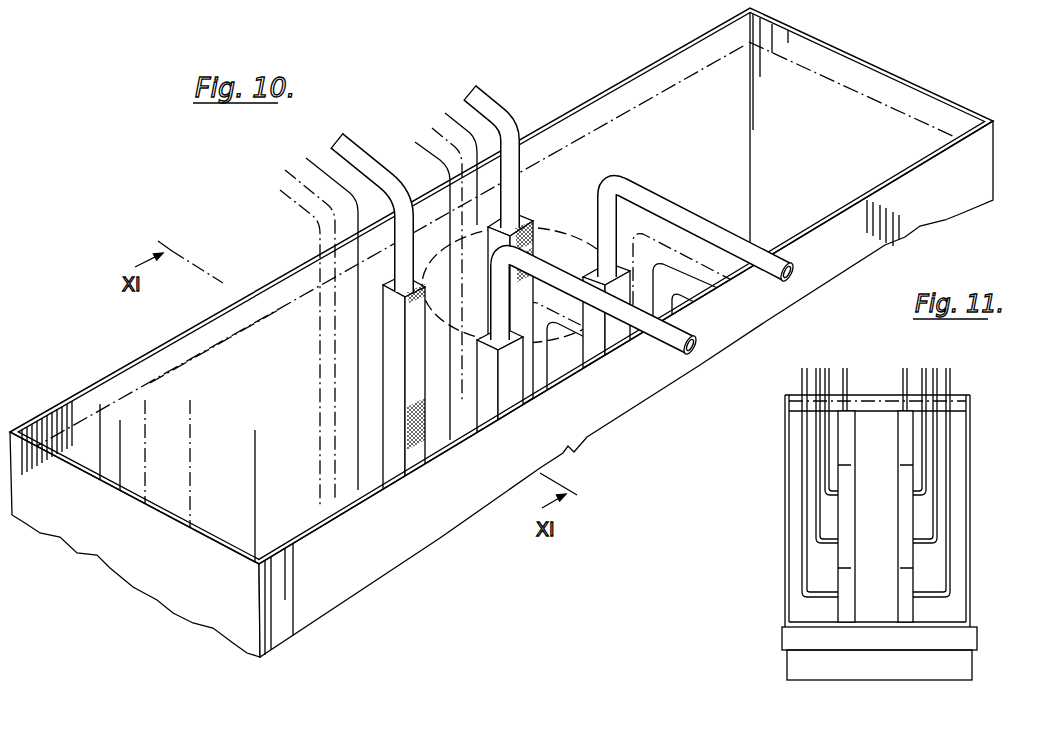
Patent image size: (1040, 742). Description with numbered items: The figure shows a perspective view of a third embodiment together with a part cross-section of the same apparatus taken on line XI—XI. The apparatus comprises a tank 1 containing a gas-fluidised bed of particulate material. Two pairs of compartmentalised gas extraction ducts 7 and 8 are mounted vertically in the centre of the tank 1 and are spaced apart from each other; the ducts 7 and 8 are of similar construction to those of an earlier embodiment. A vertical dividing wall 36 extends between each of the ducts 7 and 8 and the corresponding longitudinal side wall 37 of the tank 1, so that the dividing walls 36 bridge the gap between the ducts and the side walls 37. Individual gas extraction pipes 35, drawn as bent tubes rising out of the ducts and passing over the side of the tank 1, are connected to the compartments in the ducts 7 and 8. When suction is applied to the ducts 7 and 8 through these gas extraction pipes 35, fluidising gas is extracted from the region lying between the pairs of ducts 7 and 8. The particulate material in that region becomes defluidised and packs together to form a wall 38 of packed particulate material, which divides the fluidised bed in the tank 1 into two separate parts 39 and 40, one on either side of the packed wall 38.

In FIG. 10, the tank 1 is at (849, 74).
In FIG. 11, the tank 1 is at (958, 491).
In FIG. 10, the gas extraction duct 7 is at (530, 227).
In FIG. 11, the gas extraction duct 7 is at (845, 552).
In FIG. 10, the gas extraction duct 8 is at (490, 412).
In FIG. 11, the gas extraction duct 8 is at (905, 534).
In FIG. 10, the gas extraction pipe 35 is at (338, 140).
In FIG. 11, the gas extraction pipe 35 is at (818, 372).
In FIG. 10, the vertical dividing wall 36 is at (453, 207).
In FIG. 11, the vertical dividing wall 36 is at (958, 433).
In FIG. 10, the longitudinal side wall 37 is at (322, 257).
In FIG. 11, the longitudinal side wall 37 is at (970, 405).
In FIG. 10, the wall of packed particulate material 38 is at (433, 346).
In FIG. 11, the wall of packed particulate material 38 is at (878, 505).
In FIG. 10, the part of fluidised bed 39 is at (610, 118).
In FIG. 10, the part of fluidised bed 40 is at (212, 352).